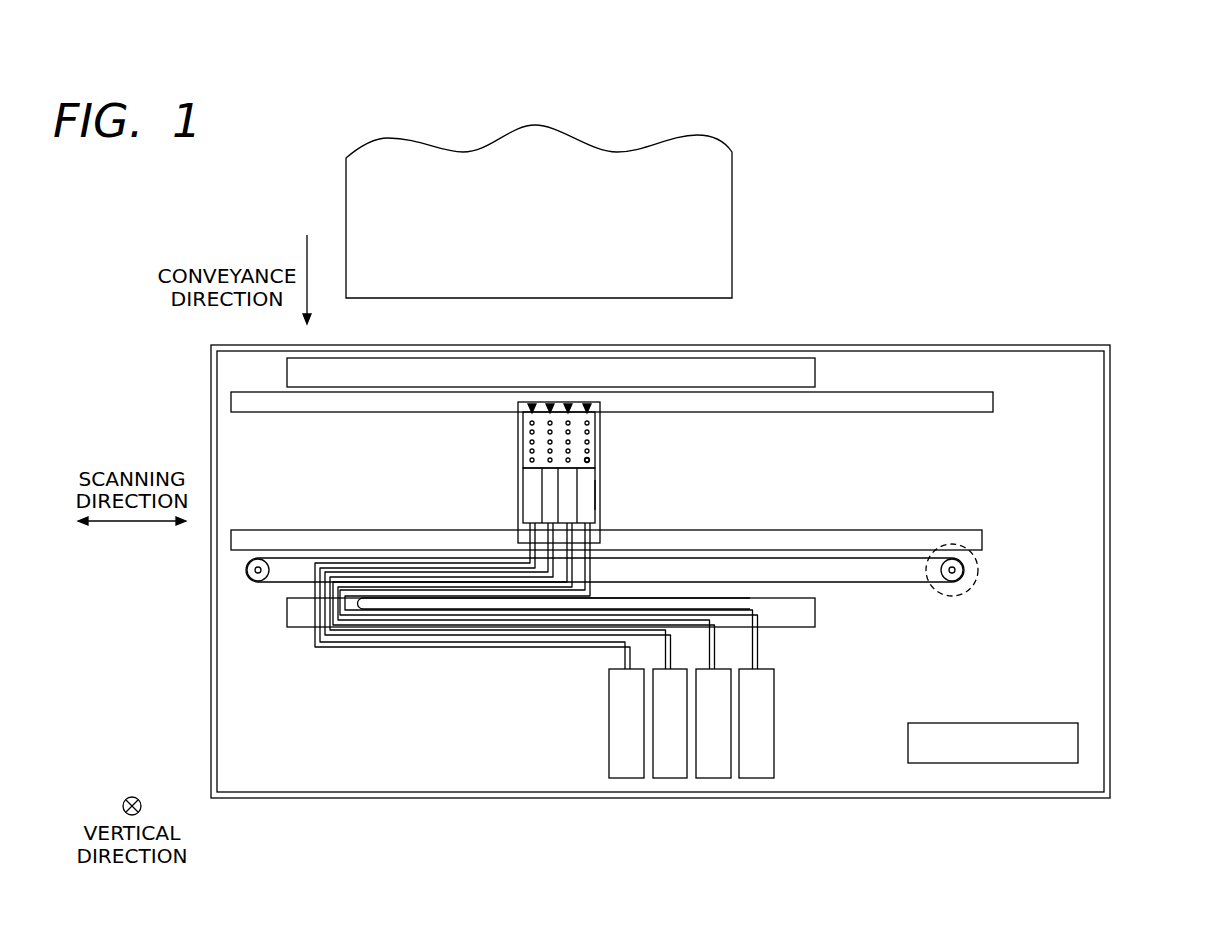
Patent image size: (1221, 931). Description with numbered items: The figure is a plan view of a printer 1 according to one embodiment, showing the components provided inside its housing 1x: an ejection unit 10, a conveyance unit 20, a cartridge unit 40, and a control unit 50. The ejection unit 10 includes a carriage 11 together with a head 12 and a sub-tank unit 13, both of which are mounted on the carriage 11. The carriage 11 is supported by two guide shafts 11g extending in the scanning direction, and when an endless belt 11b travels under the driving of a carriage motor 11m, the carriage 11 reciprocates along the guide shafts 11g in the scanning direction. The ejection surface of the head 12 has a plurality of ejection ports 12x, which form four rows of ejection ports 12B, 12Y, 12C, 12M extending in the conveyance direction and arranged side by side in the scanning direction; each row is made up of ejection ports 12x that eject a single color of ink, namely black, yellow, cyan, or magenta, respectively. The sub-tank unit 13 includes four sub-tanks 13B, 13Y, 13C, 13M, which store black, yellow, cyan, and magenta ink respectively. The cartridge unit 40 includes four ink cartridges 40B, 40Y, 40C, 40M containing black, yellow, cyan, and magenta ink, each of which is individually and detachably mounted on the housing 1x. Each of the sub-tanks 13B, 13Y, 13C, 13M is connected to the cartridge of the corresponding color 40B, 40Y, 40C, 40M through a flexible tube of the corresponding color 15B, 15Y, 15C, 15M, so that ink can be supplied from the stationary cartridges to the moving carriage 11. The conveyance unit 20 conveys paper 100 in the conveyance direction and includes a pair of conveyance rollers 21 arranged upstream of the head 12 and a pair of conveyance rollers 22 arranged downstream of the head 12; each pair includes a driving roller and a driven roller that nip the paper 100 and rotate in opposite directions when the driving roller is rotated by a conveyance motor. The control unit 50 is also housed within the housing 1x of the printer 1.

The printer 1 is at (701, 510).
The housing 1x is at (1110, 607).
The ejection unit 10 is at (556, 380).
The carriage 11 is at (527, 472).
The endless belt 11b is at (880, 583).
The guide shafts 11g is at (240, 402).
The carriage motor 11m is at (953, 597).
The head 12 is at (588, 350).
The row of ejection ports for black ink 12B is at (532, 404).
The row of ejection ports for yellow ink 12Y is at (550, 404).
The row of ejection ports for cyan ink 12C is at (568, 404).
The row of ejection ports for magenta ink 12M is at (587, 404).
The ejection ports 12x is at (597, 458).
The sub-tank unit 13 is at (484, 472).
The sub-tank for black ink 13B is at (527, 475).
The sub-tank for yellow ink 13Y is at (548, 490).
The sub-tank for cyan ink 13C is at (565, 500).
The sub-tank for magenta ink 13M is at (583, 515).
The flexible tube for black ink 15B is at (335, 650).
The flexible tube for yellow ink 15Y is at (413, 637).
The flexible tube for cyan ink 15C is at (493, 620).
The flexible tube for magenta ink 15M is at (559, 610).
The conveyance unit 20 is at (811, 344).
The pair of conveyance rollers 21 is at (760, 373).
The pair of conveyance rollers 22 is at (800, 628).
The cartridge unit 40 is at (679, 785).
The ink cartridge for black ink 40B is at (626, 765).
The ink cartridge for yellow ink 40Y is at (668, 765).
The ink cartridge for cyan ink 40C is at (712, 765).
The ink cartridge for magenta ink 40M is at (776, 765).
The control unit 50 is at (995, 765).
The paper 100 is at (733, 202).